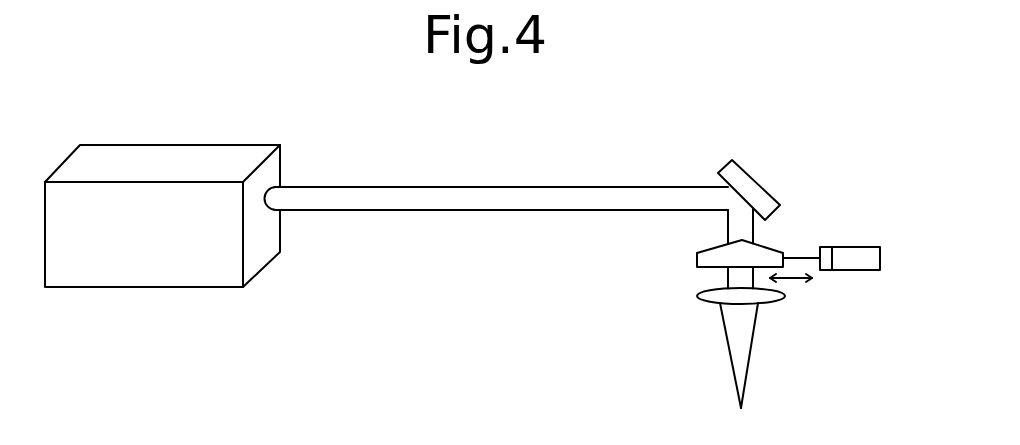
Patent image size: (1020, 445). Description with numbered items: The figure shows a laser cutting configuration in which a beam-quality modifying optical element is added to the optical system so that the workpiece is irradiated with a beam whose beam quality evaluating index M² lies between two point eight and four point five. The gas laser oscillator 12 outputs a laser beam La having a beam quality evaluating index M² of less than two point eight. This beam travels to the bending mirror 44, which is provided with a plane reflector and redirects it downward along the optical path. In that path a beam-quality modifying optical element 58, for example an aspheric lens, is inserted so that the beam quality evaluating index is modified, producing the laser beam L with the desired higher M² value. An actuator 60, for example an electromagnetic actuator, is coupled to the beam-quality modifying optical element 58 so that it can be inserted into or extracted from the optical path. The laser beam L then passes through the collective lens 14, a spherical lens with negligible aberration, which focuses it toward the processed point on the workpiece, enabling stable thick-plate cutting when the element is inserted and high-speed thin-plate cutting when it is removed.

The gas laser oscillator 12 is at (180, 145).
The laser beam La is at (342, 187).
The bending mirror 44 is at (755, 179).
The beam-quality modifying optical element 58 is at (710, 249).
The actuator 60 is at (858, 247).
The laser beam L is at (727, 274).
The collective lens 14 is at (768, 307).